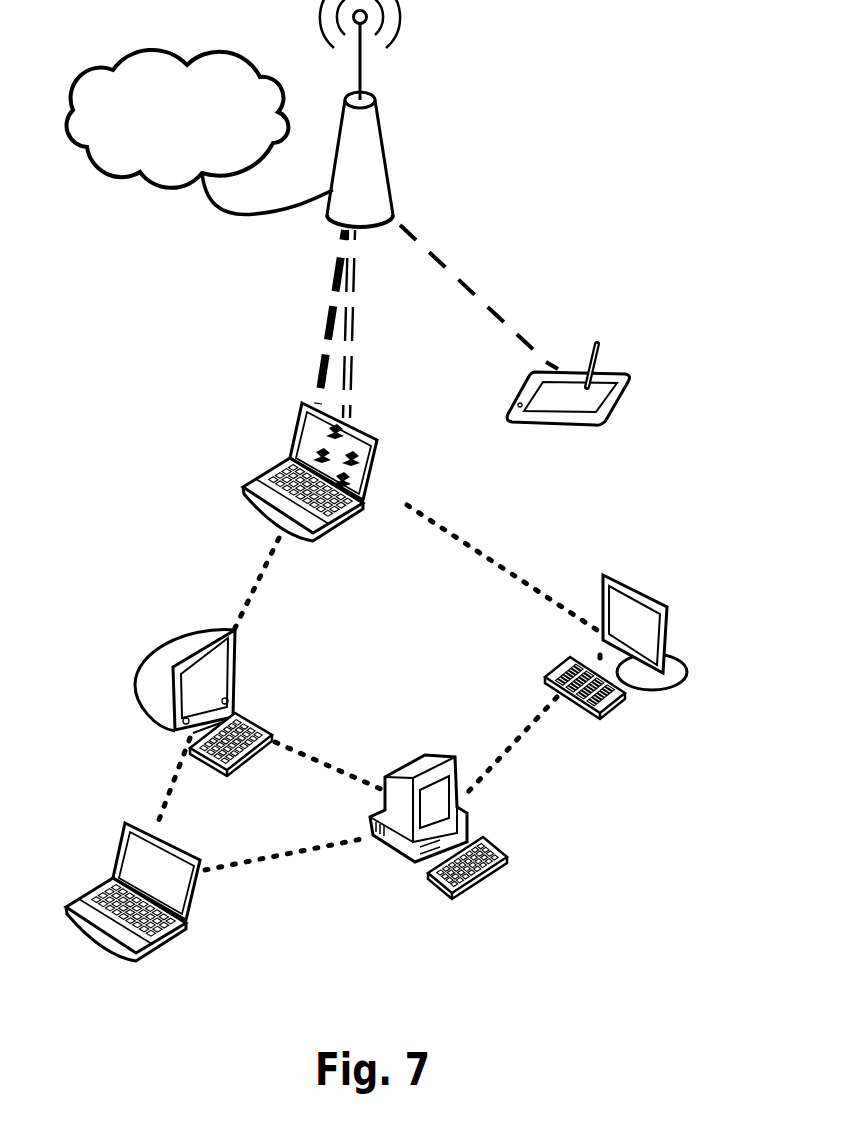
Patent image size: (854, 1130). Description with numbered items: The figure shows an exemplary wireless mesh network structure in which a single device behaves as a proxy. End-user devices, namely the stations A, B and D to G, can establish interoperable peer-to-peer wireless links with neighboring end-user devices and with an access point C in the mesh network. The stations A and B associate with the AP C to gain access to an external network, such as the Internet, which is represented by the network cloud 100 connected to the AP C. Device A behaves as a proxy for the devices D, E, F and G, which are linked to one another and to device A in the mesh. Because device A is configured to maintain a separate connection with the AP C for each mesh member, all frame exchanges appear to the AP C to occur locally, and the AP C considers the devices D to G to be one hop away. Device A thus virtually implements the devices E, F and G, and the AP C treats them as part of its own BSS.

The network cloud 100 is at (200, 132).
The device A is at (322, 471).
The device B is at (554, 384).
The access point (AP) C is at (362, 113).
The device D is at (203, 716).
The device E is at (133, 903).
The device F is at (438, 840).
The device G is at (616, 659).